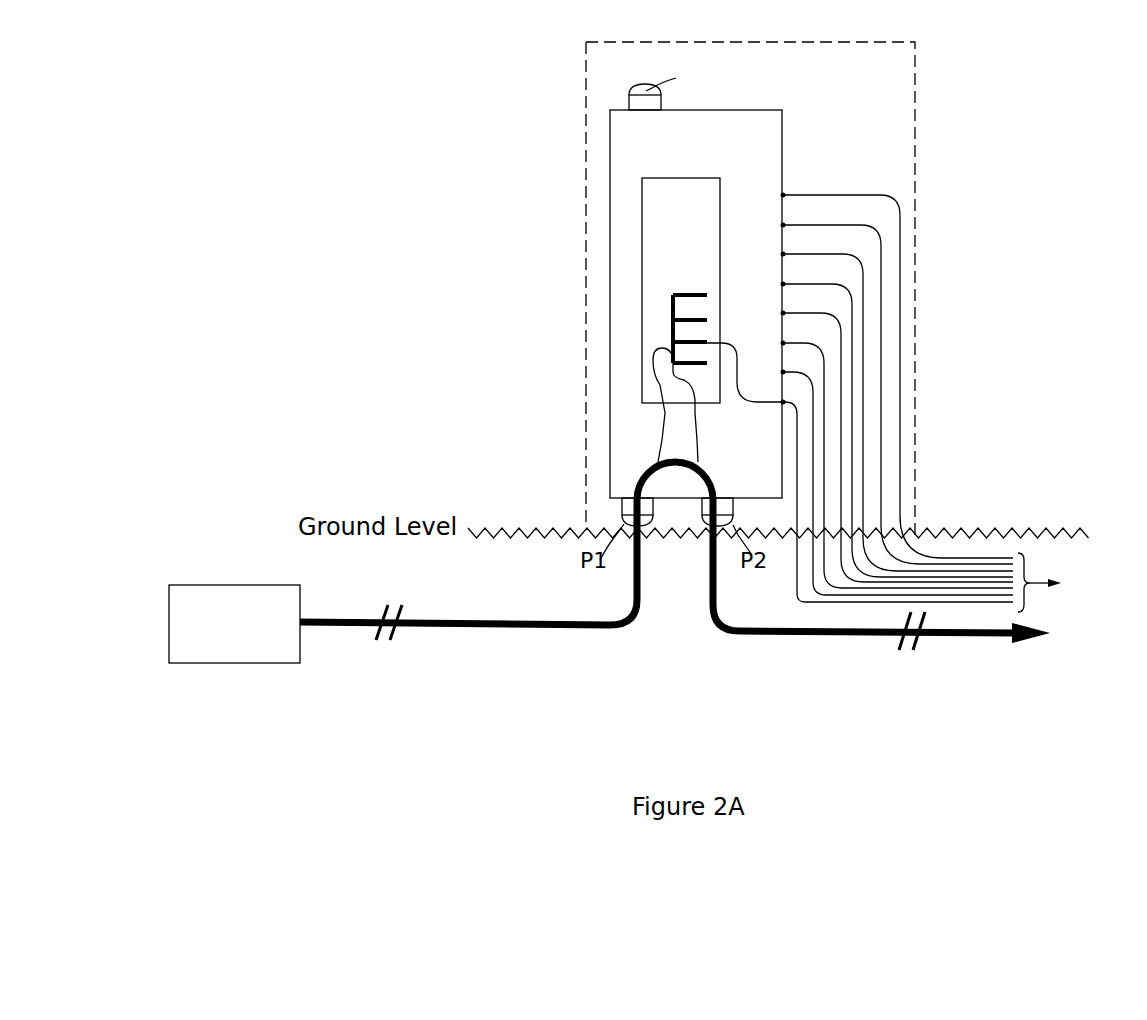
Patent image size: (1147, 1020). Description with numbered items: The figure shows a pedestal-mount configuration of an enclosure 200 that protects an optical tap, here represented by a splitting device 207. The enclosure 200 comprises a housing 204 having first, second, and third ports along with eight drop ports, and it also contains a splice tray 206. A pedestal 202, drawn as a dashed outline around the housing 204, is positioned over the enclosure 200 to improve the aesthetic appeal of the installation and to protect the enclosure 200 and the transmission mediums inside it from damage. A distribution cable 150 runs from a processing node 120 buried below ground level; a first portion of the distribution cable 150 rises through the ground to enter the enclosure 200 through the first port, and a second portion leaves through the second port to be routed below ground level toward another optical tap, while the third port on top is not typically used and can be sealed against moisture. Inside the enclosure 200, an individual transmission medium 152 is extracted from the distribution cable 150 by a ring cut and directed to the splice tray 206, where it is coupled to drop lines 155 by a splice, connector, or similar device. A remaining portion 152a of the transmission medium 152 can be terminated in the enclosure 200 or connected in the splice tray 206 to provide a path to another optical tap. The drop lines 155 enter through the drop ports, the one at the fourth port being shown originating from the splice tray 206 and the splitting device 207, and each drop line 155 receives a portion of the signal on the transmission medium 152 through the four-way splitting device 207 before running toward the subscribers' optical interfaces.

The processing node 120 is at (234, 624).
The distribution cable 150 is at (513, 632).
The individual transmission medium 152 is at (660, 443).
The remaining portion of individual transmission medium 152a is at (697, 438).
The drop lines 155 is at (853, 189).
The enclosure 200 is at (802, 327).
The pedestal 202 is at (586, 176).
The housing 204 is at (610, 245).
The splice tray 206 is at (642, 297).
The splitting device 207 is at (672, 320).